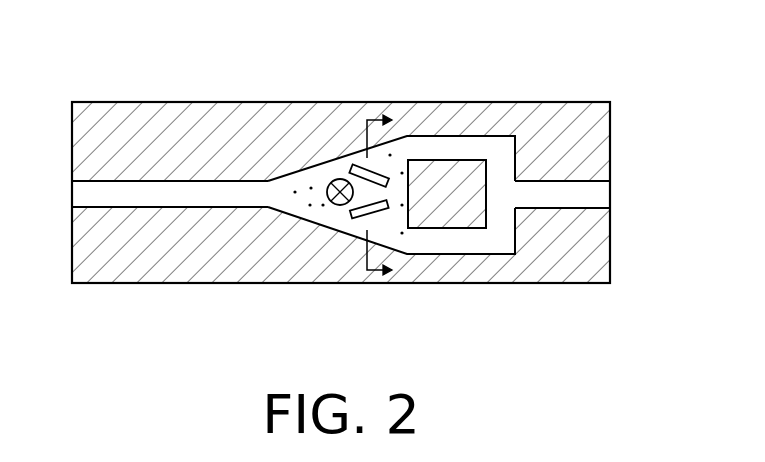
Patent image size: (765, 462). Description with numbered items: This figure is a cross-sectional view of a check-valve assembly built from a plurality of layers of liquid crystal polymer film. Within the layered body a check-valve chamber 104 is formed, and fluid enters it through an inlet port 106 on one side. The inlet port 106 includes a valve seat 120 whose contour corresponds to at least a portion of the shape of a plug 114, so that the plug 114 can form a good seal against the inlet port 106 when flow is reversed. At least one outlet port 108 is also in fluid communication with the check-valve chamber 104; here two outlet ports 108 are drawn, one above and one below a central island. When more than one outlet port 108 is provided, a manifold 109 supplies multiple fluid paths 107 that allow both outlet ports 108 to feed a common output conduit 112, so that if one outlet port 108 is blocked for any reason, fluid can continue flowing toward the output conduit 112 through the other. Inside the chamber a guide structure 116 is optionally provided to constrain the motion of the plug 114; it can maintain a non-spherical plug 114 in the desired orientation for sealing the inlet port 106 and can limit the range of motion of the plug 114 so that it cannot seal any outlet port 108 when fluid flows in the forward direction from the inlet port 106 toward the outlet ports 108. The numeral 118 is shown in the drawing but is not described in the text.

The check-valve chamber 104 is at (353, 232).
The inlet port 106 is at (268, 208).
The fluid paths 107 is at (457, 143).
The outlet port 108 is at (407, 143).
The manifold 109 is at (500, 155).
The output conduit 112 is at (563, 200).
The plug 114 is at (310, 177).
The guide structure 116 is at (352, 168).
The detection beam 118 is at (332, 182).
The valve seat 120 is at (269, 180).